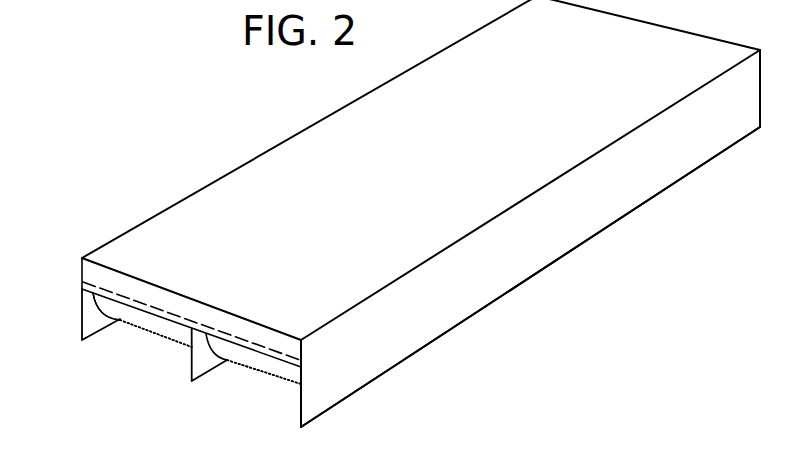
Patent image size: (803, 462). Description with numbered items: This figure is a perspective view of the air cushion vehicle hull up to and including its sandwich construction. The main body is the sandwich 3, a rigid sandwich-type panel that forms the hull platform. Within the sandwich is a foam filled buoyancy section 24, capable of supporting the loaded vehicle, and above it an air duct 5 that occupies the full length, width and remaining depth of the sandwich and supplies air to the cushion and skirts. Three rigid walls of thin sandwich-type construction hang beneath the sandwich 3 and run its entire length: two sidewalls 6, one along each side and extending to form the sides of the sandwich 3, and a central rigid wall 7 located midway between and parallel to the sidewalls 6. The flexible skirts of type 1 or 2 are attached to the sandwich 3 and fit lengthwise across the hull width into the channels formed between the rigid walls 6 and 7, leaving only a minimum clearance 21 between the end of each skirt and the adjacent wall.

The flexible skirt 1 is at (210, 379).
The flexible skirt 2 is at (157, 319).
The sandwich 3 is at (421, 213).
The air duct 5 is at (217, 320).
The sidewall 6 is at (421, 277).
The central rigid wall 7 is at (209, 355).
The minimum clearance 21 is at (121, 321).
The foam filled buoyancy section 24 is at (93, 292).